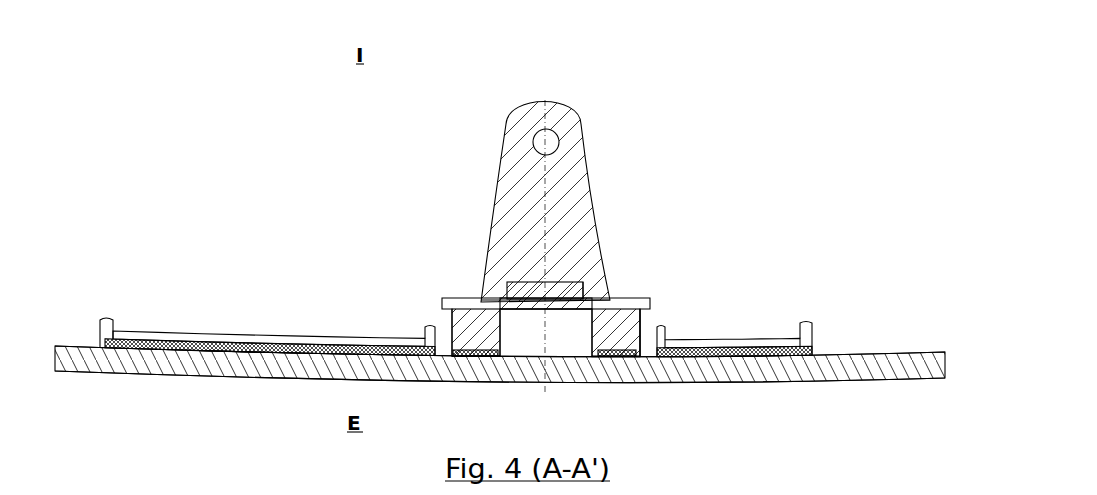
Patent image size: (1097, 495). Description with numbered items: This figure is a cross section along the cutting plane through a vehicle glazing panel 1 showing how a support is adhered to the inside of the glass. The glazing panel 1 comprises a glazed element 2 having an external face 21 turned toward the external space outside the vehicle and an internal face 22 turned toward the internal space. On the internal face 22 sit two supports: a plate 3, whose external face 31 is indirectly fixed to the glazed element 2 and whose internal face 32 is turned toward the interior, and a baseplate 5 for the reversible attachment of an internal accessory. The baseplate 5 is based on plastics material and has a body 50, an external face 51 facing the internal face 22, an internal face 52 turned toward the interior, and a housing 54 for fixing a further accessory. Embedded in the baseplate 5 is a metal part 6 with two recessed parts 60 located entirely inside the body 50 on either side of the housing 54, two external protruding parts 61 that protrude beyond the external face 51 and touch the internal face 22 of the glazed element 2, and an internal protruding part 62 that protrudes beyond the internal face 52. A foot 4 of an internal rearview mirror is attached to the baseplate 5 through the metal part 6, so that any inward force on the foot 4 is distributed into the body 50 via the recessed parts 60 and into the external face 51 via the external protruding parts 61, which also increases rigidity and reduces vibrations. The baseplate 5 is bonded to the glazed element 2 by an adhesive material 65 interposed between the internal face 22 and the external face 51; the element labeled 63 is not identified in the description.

The vehicle glazing panel 1 is at (119, 136).
The glazed element 2 is at (86, 372).
The external face 21 is at (152, 375).
The internal face 22 is at (60, 345).
The plate 3 is at (233, 195).
The external face 31 is at (213, 345).
The internal face 32 is at (207, 337).
The foot of an internal rearview mirror 4 is at (568, 123).
The baseplate 5 is at (424, 248).
The metal part 6 is at (515, 292).
The body 50 is at (632, 330).
The external face 51 is at (630, 350).
The internal face 52 is at (622, 297).
The housing 54 is at (562, 341).
The recessed part 60 is at (492, 333).
The external protruding part 61 is at (593, 353).
The internal protruding part 62 is at (560, 282).
The plate lower face 63 is at (240, 353).
The adhesive material 65 is at (475, 355).